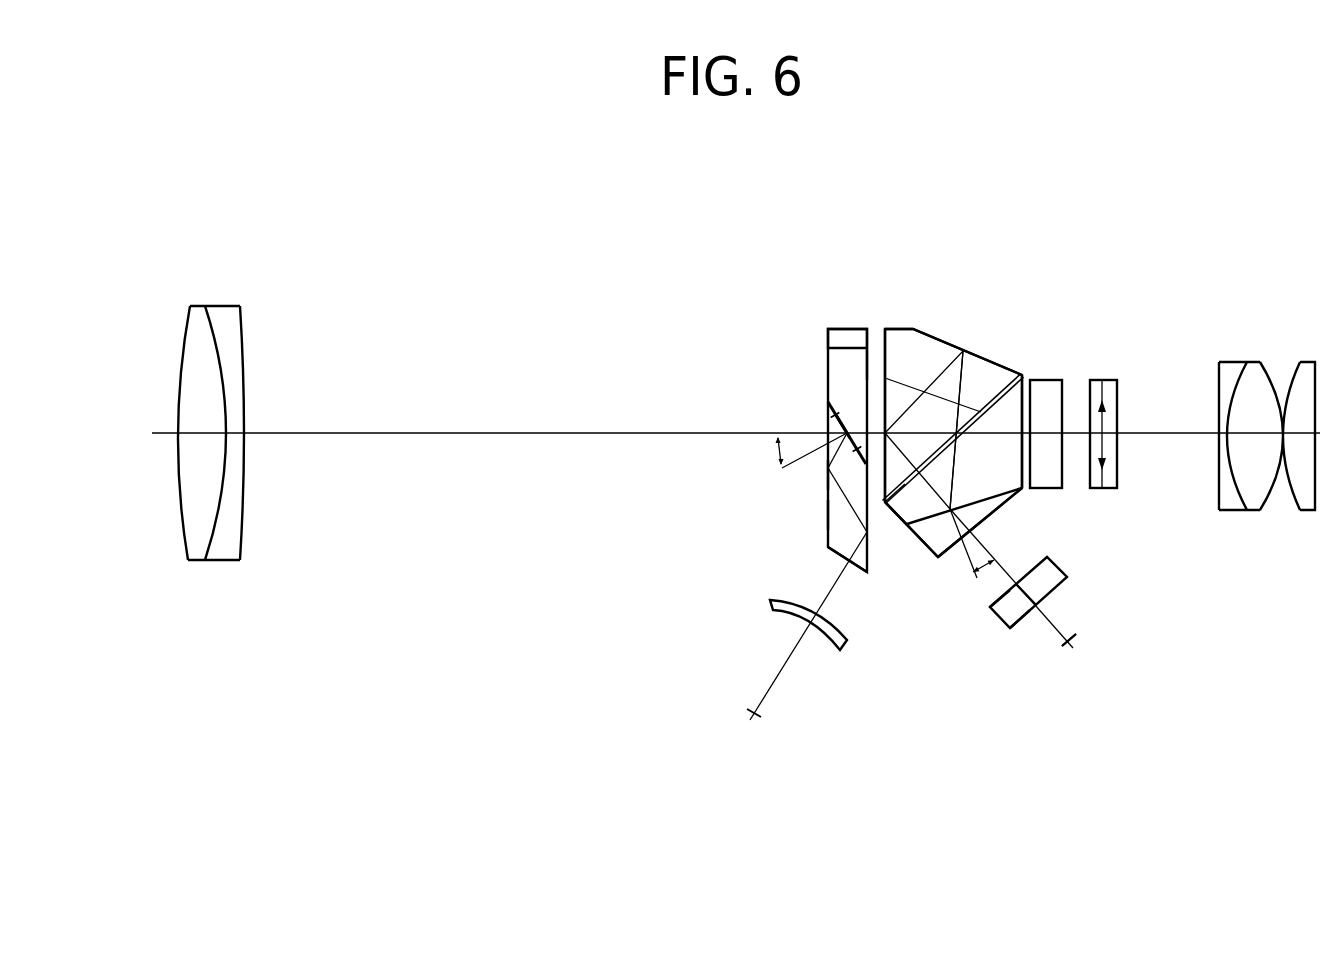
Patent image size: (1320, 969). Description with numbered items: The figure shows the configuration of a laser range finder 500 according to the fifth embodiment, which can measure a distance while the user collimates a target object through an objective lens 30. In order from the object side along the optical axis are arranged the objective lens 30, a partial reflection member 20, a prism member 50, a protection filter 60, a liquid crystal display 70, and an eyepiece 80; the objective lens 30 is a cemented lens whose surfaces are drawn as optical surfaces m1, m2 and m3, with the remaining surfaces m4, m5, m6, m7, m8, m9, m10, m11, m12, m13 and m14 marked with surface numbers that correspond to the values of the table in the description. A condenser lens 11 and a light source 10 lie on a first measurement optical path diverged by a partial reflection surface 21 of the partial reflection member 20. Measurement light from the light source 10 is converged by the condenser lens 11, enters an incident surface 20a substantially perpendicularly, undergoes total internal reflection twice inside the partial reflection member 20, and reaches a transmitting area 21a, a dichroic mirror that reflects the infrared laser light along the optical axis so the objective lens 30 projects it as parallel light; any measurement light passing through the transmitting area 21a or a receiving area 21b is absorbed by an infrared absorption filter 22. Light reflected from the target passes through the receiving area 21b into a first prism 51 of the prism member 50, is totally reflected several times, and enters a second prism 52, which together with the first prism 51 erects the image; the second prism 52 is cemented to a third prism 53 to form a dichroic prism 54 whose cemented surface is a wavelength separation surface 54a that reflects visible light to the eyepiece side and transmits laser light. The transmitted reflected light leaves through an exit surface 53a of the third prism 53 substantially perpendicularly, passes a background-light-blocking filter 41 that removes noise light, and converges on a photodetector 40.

The laser range finder 500 is at (1148, 268).
The objective lens 30 is at (182, 298).
The optical surface m1 is at (185, 533).
The optical surface m2 is at (203, 543).
The optical surface m3 is at (242, 540).
The light source 10 is at (751, 712).
The condenser lens 11 is at (852, 642).
The partial reflection member 20 is at (866, 568).
The incident surface 20a is at (830, 549).
The infrared absorption filter 22 is at (838, 329).
The partial reflection surface 21 is at (716, 343).
The transmitting area 21a is at (843, 428).
The receiving area 21b is at (833, 414).
The optical surface m4 is at (828, 473).
The optical surface m5 is at (848, 412).
The optical surface m6 is at (867, 372).
The optical surface m7 is at (885, 388).
The optical surface m8 is at (828, 518).
The optical surface m9 is at (892, 503).
The optical surface m10 is at (1013, 490).
The optical surface m11 is at (953, 560).
The optical surface m12 is at (993, 598).
The optical surface m13 is at (1018, 622).
The optical surface m14 is at (1057, 635).
The prism member 50 is at (957, 322).
The first prism 51 is at (993, 370).
The second prism 52 is at (985, 490).
The third prism 53 is at (982, 512).
The exit surface 53a is at (985, 515).
The dichroic prism 54 is at (1102, 497).
The wavelength separation surface 54a is at (898, 522).
The background-light-blocking filter 41 is at (1057, 583).
The photodetector 40 is at (1070, 637).
The protection filter 60 is at (1052, 380).
The liquid crystal display 70 is at (1105, 380).
The eyepiece 80 is at (1318, 350).